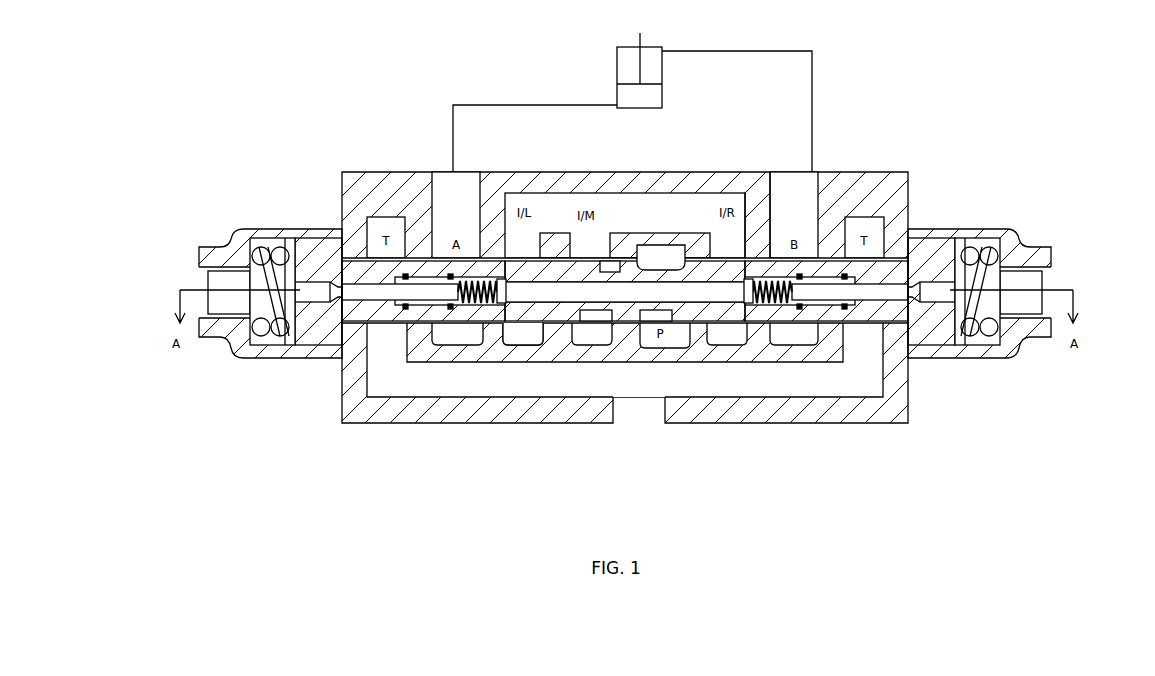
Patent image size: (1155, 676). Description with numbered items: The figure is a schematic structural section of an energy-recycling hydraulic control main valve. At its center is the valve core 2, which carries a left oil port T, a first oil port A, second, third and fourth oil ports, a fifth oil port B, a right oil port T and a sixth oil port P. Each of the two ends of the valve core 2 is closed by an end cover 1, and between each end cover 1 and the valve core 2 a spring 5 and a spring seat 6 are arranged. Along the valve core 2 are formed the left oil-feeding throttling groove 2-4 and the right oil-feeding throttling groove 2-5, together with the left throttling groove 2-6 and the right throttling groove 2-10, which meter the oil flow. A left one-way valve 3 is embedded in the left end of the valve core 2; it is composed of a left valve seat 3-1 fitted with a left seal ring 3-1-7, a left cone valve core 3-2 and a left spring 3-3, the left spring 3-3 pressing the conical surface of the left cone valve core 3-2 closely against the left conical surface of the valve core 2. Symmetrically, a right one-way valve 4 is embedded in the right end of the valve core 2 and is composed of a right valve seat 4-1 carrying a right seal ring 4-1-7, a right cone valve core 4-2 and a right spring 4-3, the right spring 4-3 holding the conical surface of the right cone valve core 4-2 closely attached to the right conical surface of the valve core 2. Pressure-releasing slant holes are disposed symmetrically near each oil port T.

The end cover 1 is at (214, 253).
The valve core 2 is at (601, 275).
The left oil-feeding throttling groove 2-4 is at (619, 261).
The right oil-feeding throttling groove 2-5 is at (652, 262).
The left throttling groove 2-6 is at (512, 325).
The right throttling groove 2-10 is at (748, 258).
The left one-way valve 3 is at (429, 303).
The left valve seat 3-1 is at (340, 305).
The left seal ring 3-1-7 is at (462, 303).
The left cone valve core 3-2 is at (488, 278).
The left spring 3-3 is at (472, 292).
The right one-way valve 4 is at (818, 375).
The right valve seat 4-1 is at (911, 305).
The right seal ring 4-1-7 is at (795, 303).
The right cone valve core 4-2 is at (727, 371).
The right spring 4-3 is at (771, 302).
The spring 5 is at (259, 250).
The spring seat 6 is at (311, 250).